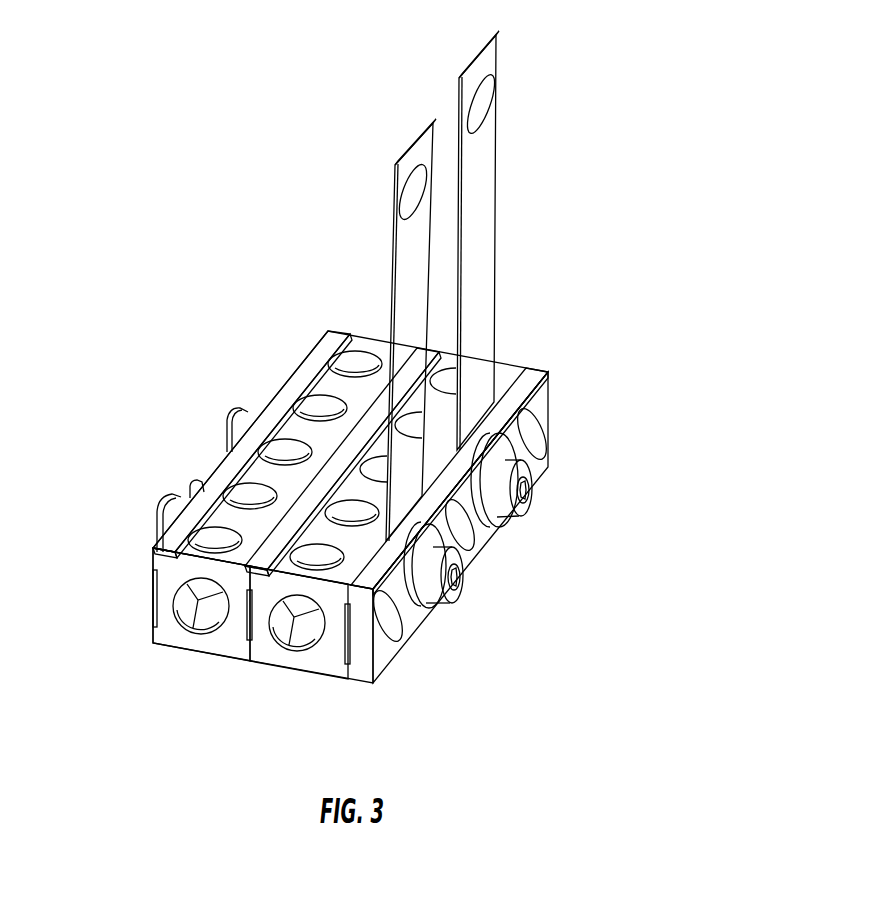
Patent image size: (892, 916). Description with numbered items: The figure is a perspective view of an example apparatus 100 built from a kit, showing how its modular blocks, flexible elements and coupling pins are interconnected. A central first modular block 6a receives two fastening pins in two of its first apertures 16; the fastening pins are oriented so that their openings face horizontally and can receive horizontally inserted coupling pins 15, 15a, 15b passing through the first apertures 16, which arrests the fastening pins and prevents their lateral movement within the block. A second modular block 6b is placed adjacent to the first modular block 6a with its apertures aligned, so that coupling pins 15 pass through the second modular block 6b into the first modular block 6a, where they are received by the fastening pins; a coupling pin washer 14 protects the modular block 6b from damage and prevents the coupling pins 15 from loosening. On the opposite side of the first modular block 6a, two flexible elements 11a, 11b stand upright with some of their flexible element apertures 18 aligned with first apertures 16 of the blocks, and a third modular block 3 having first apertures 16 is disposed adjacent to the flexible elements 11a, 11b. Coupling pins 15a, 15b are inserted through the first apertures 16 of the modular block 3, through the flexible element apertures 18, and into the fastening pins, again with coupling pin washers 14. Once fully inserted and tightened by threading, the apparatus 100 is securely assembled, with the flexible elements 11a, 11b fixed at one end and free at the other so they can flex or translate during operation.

The apparatus 100 is at (601, 116).
The third modular block 3 is at (550, 370).
The first modular block 6a is at (313, 673).
The second modular block 6b is at (213, 657).
The flexible element 11a is at (463, 74).
The flexible element 11b is at (395, 165).
The coupling pin washer 14 is at (264, 403).
The coupling pin 15 is at (226, 414).
The coupling pin 15a is at (537, 495).
The coupling pin 15b is at (440, 607).
The first aperture 16 is at (354, 358).
The flexible element aperture 18 is at (479, 104).